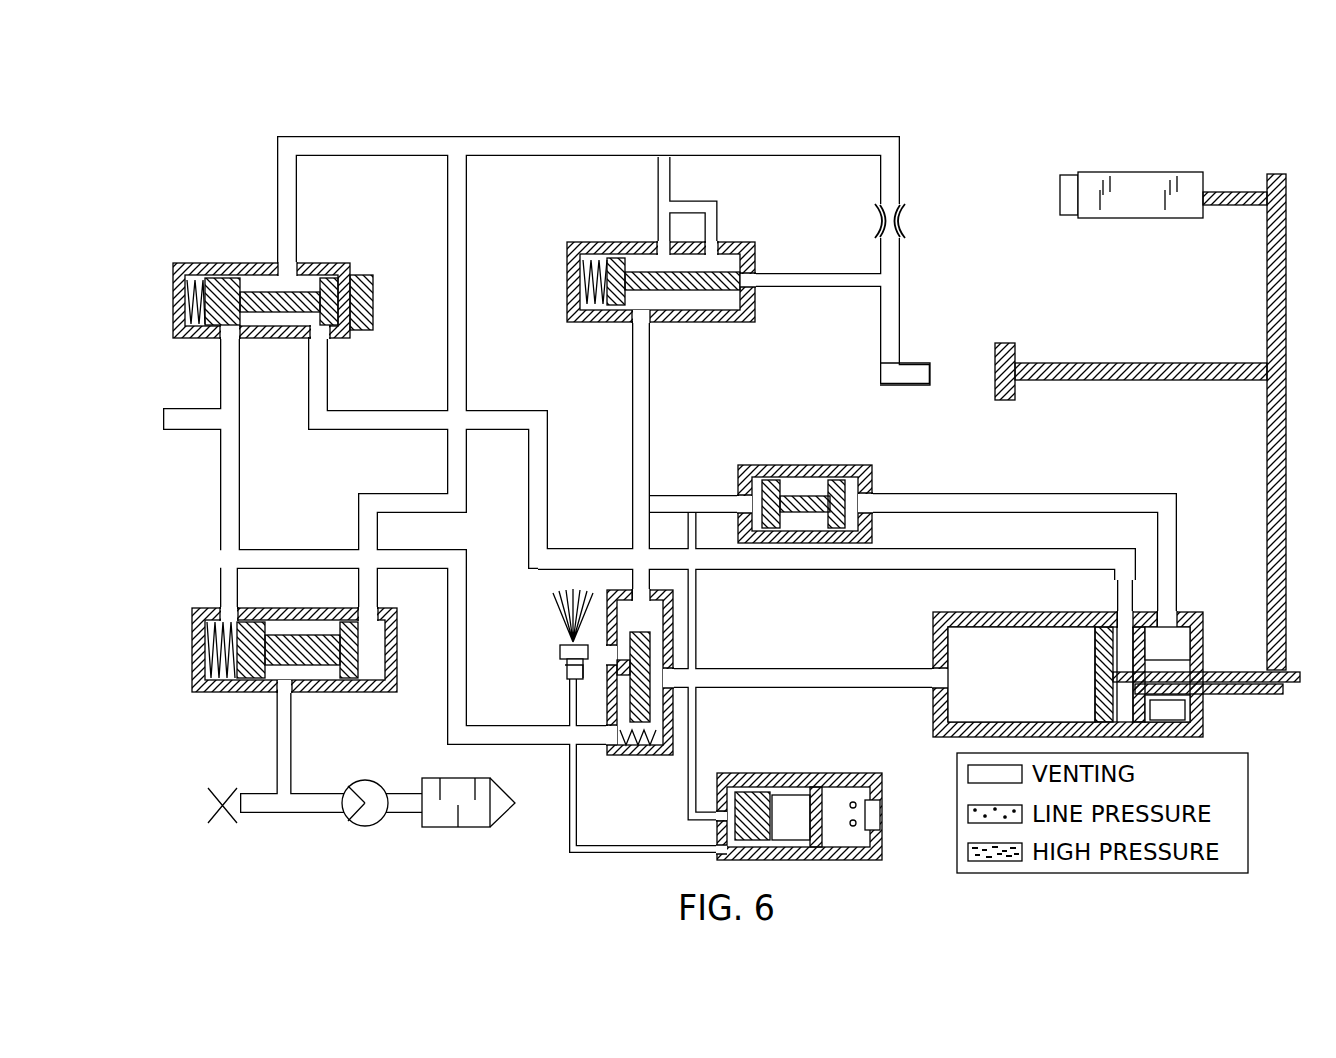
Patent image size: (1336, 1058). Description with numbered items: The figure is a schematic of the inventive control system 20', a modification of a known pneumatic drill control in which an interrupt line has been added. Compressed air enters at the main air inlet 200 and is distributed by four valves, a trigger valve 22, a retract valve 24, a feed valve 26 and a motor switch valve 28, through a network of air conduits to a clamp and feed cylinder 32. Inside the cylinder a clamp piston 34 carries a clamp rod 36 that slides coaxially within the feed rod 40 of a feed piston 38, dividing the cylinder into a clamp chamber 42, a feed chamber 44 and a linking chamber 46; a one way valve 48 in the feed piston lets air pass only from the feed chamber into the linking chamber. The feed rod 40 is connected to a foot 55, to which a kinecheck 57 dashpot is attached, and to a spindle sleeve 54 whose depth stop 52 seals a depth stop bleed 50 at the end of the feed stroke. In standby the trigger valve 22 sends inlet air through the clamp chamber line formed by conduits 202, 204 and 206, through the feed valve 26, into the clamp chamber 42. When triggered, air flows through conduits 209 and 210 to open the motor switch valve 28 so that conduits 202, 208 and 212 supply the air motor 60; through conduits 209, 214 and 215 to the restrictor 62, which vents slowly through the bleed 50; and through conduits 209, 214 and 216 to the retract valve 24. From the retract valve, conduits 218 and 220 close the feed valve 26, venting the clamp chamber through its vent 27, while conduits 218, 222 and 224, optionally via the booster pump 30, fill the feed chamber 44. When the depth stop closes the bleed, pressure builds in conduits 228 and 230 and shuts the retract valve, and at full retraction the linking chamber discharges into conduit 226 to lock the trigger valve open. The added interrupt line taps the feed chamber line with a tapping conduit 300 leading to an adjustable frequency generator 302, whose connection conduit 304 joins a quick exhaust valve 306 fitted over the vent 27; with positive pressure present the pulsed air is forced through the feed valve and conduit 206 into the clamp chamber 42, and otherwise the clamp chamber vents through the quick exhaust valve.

The control system 20' is at (1088, 63).
The trigger valve 22 is at (173, 275).
The retract valve 24 is at (590, 242).
The feed valve 26 is at (618, 755).
The vent 27 is at (566, 672).
The motor switch valve 28 is at (192, 642).
The booster pump 30 is at (850, 465).
The clamp and feed cylinder 32 is at (933, 715).
The clamp piston 34 is at (1100, 640).
The clamp rod 36 is at (1290, 683).
The feed piston 38 is at (1145, 722).
The feed rod 40 is at (1240, 684).
The clamp chamber 42 is at (980, 640).
The feed chamber 44 is at (1162, 612).
The linking chamber 46 is at (1122, 628).
The one way valve 48 is at (1152, 720).
The depth stop bleed 50 is at (930, 373).
The depth stop 52 is at (1003, 400).
The spindle sleeve 54 is at (1155, 380).
The foot 55 is at (1267, 447).
The kinecheck 57 is at (1137, 218).
The air motor 60 is at (375, 781).
The restrictor 62 is at (906, 222).
The main air inlet 200 is at (163, 420).
The conduit 202 is at (238, 486).
The conduit 204 is at (468, 618).
The conduit 206 is at (808, 678).
The conduit 208 is at (240, 590).
The conduit 209 is at (340, 158).
The conduit 210 is at (455, 310).
The conduit 212 is at (292, 710).
The conduit 214 is at (510, 158).
The conduit 215 is at (826, 158).
The conduit 216 is at (671, 178).
The conduit 218 is at (651, 362).
The conduit 220 is at (632, 540).
The conduit 222 is at (678, 500).
The conduit 224 is at (1080, 493).
The conduit 226 is at (548, 494).
The conduit 228 is at (900, 290).
The conduit 230 is at (826, 288).
The tapping conduit 300 is at (698, 603).
The adjustable frequency generator 302 is at (880, 783).
The connection conduit 304 is at (578, 828).
The quick exhaust valve 306 is at (560, 662).